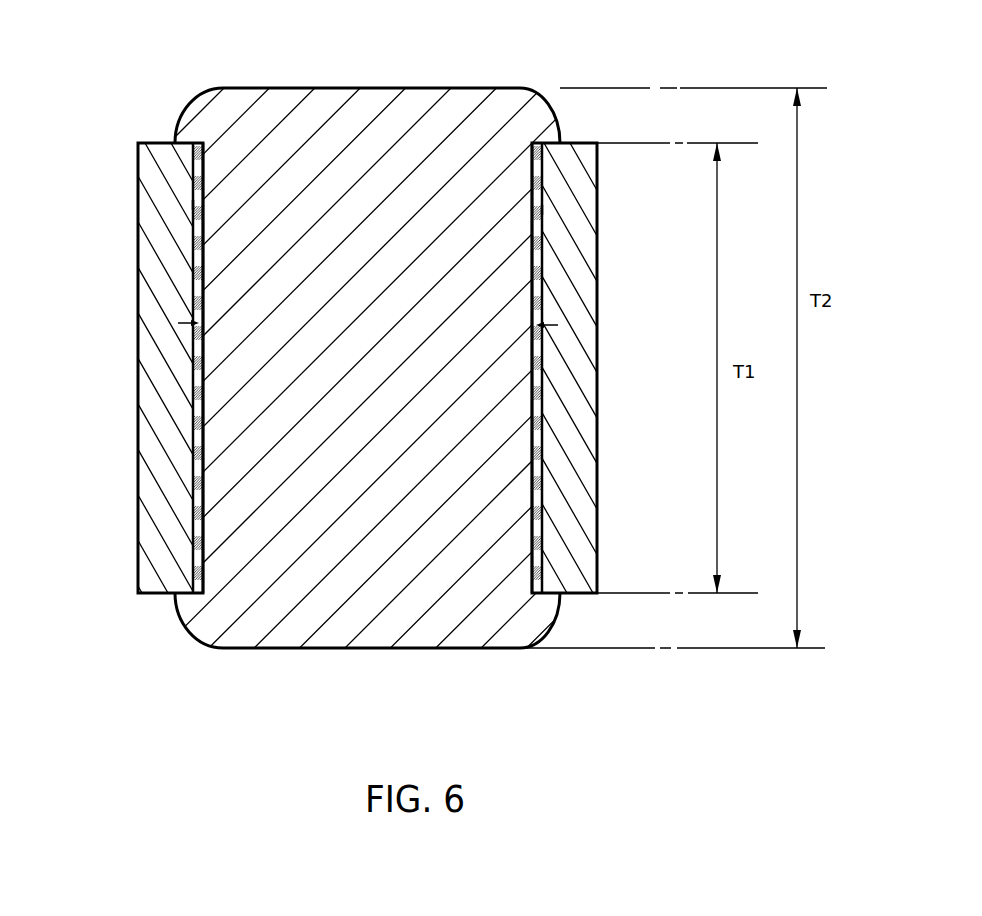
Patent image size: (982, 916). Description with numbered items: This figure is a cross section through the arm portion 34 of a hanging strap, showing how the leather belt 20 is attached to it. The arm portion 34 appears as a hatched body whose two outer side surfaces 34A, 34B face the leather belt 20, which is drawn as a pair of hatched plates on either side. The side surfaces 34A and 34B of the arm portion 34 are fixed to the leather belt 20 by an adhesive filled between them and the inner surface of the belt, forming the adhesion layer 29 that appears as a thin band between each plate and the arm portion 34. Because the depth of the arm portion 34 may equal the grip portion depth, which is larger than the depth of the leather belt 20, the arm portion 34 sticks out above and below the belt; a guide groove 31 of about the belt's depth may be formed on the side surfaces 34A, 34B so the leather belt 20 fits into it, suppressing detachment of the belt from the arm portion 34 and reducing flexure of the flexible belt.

The arm portion 34 is at (319, 106).
The side surface 34A is at (197, 400).
The side surface 34B is at (547, 388).
The leather belt 20 is at (152, 455).
The adhesion layer 29 is at (197, 203).
The guide groove 31 is at (196, 331).